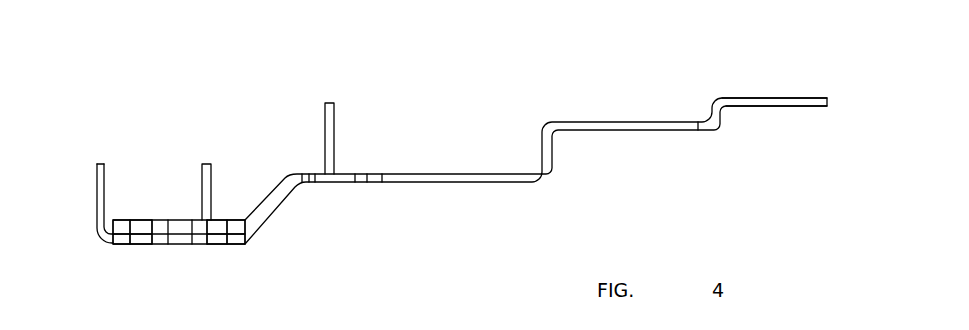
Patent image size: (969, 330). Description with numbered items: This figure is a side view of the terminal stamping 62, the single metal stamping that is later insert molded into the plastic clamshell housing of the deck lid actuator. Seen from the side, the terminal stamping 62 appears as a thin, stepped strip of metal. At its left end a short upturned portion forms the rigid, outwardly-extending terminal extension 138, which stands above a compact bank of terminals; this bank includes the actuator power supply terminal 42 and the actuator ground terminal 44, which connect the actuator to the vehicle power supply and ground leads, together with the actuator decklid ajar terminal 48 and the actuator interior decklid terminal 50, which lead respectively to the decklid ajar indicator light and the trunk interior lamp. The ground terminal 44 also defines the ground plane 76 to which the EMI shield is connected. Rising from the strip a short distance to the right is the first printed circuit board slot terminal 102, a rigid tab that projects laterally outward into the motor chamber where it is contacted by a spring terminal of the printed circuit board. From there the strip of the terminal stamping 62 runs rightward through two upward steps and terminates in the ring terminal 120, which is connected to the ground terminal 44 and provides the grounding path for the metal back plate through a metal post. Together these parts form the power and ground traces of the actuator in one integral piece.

The rigid terminal extension 138 is at (100, 168).
The actuator power supply terminal 42 is at (123, 226).
The actuator ground terminal 44 is at (130, 269).
The ground plane 76 is at (160, 226).
The actuator decklid ajar terminal 48 is at (198, 226).
The actuator interior decklid terminal 50 is at (235, 225).
The first printed circuit board slot terminal 102 is at (332, 110).
The terminal stamping 62 is at (625, 116).
The ring terminal 120 is at (740, 103).